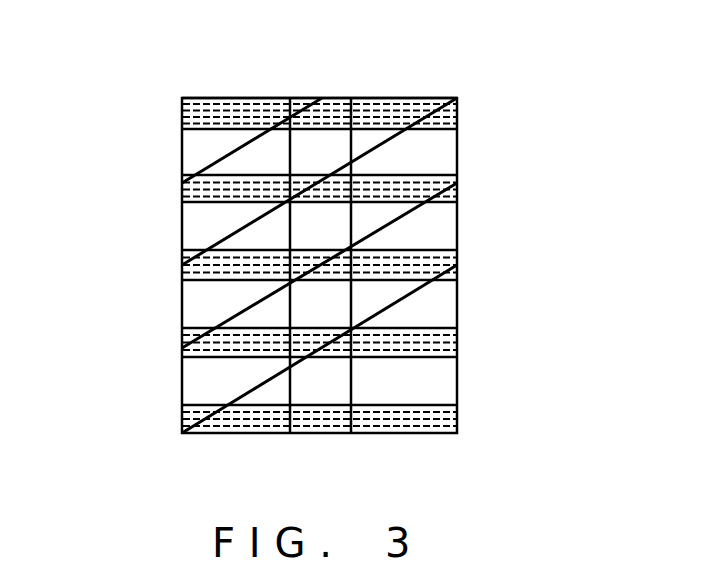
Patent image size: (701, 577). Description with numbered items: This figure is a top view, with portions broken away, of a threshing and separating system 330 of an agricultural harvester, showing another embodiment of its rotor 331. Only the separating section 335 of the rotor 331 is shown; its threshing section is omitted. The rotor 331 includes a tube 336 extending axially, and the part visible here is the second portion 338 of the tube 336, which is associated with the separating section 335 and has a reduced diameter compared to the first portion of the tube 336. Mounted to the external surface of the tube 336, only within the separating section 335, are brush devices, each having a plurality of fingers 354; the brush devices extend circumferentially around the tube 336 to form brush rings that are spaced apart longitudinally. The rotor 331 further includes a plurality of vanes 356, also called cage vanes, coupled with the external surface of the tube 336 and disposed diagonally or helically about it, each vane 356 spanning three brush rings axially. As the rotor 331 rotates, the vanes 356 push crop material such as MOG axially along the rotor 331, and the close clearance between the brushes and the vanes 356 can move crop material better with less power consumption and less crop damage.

The threshing and separating system 330 is at (330, 262).
The rotor 331 is at (392, 88).
The separating section 335 is at (130, 131).
The tube 336 is at (351, 373).
The second portion 338 is at (436, 265).
The fingers 354 is at (262, 422).
The vanes 356 is at (363, 323).